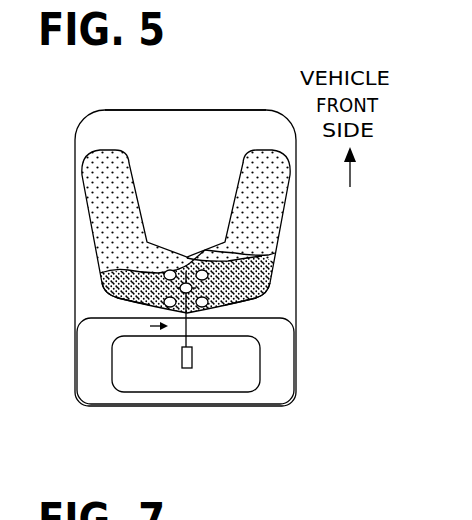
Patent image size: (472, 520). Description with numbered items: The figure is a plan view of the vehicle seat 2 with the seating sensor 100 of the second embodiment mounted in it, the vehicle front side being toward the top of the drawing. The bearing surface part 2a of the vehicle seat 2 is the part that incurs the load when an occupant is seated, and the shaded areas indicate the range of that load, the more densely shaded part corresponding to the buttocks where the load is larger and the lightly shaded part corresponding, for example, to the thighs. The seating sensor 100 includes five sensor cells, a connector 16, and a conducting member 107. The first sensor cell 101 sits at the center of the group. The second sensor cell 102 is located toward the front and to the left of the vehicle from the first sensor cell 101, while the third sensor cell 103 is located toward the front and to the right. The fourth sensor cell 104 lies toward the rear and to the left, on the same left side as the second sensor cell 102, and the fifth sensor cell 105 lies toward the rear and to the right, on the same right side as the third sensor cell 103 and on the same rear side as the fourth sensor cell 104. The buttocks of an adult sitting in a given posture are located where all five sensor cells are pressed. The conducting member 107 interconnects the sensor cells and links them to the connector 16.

The vehicle seat 2 is at (266, 110).
The bearing surface part 2a is at (187, 121).
The connector 16 is at (192, 357).
The seating sensor 100 is at (113, 332).
The first sensor cell 101 is at (243, 285).
The second sensor cell 102 is at (100, 273).
The third sensor cell 103 is at (275, 253).
The fourth sensor cell 104 is at (117, 297).
The fifth sensor cell 105 is at (233, 307).
The conducting member 107 is at (195, 322).